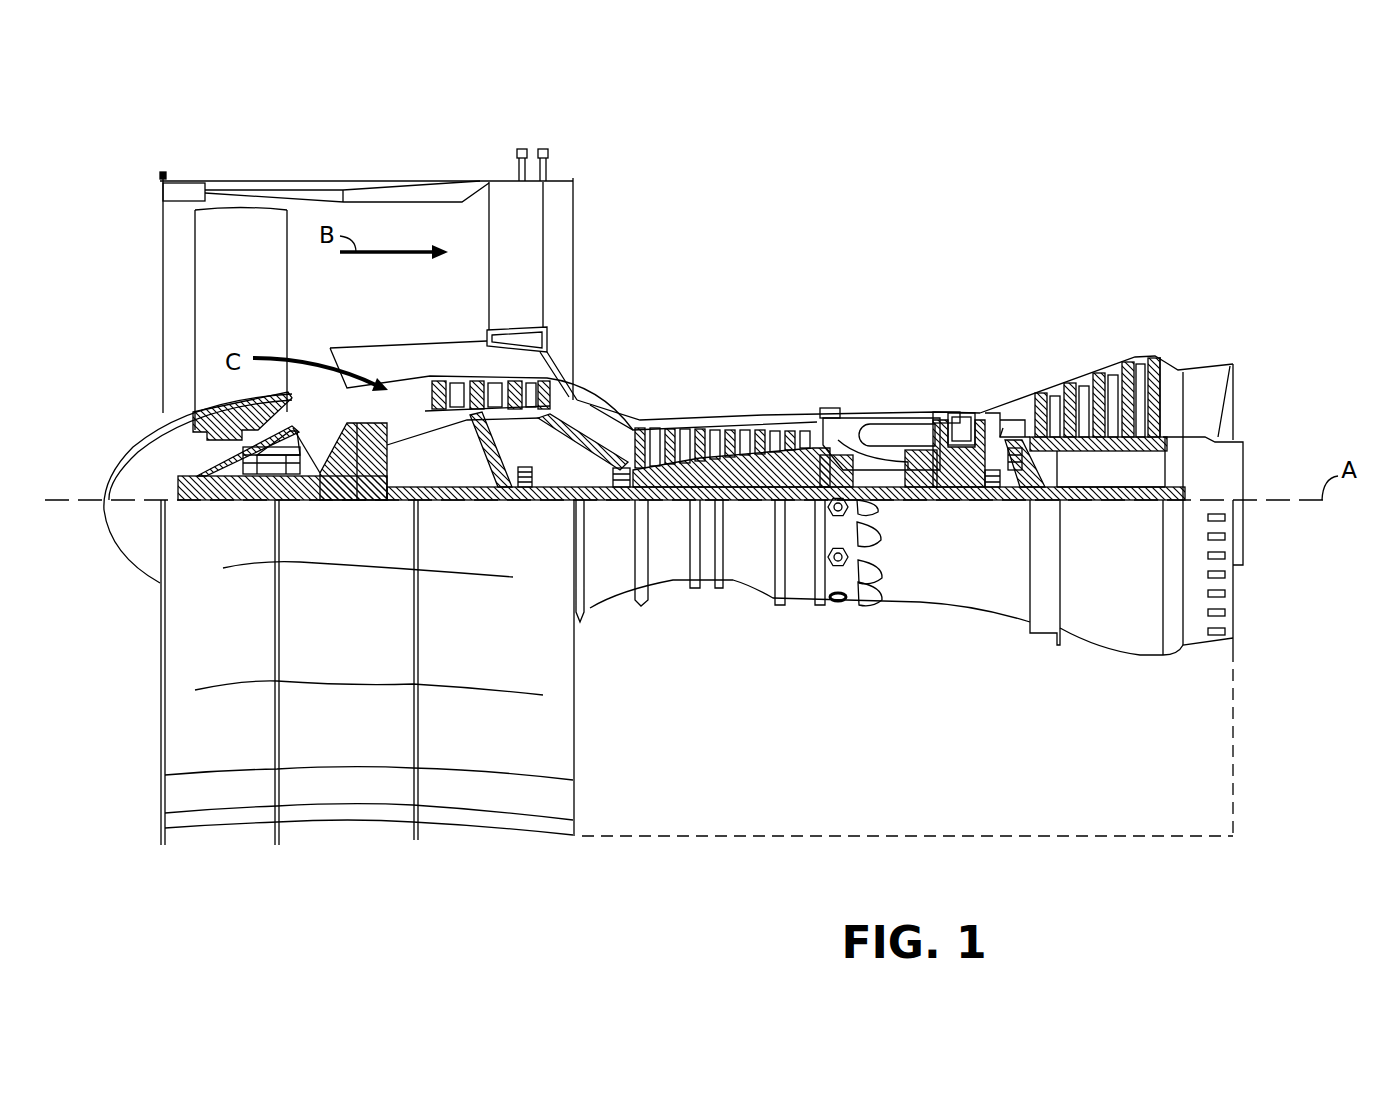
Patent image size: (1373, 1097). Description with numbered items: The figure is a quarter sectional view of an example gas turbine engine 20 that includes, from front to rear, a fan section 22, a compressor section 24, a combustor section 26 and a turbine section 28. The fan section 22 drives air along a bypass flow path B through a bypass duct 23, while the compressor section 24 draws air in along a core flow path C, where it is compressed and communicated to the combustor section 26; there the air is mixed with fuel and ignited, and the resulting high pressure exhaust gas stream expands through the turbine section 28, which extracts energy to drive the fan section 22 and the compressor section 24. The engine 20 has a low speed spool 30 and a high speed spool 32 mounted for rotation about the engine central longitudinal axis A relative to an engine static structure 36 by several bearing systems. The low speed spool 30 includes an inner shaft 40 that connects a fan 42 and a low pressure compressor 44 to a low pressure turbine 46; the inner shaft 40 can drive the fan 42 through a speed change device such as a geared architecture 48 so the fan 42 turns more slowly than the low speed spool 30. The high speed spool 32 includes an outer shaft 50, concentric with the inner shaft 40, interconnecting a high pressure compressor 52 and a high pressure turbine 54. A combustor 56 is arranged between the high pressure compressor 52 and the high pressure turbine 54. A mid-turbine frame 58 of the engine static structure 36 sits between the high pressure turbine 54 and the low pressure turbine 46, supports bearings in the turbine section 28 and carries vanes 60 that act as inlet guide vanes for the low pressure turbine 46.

The gas turbine engine 20 is at (1150, 108).
The fan section 22 is at (392, 147).
The bypass duct 23 is at (293, 856).
The compressor section 24 is at (420, 292).
The combustor section 26 is at (865, 292).
The turbine section 28 is at (940, 292).
The low speed spool 30 is at (745, 518).
The high speed spool 32 is at (781, 460).
The engine static structure 36 is at (800, 615).
The inner shaft 40 is at (597, 505).
The fan 42 is at (226, 283).
The low pressure compressor section 44 is at (508, 378).
The low pressure turbine section 46 is at (1102, 378).
The geared architecture 48 is at (372, 480).
The outer shaft 50 is at (907, 492).
The high pressure compressor section 52 is at (712, 424).
The high pressure turbine section 54 is at (960, 410).
The combustor 56 is at (877, 437).
The mid-turbine frame 58 is at (1004, 398).
The vanes 60 is at (1003, 428).